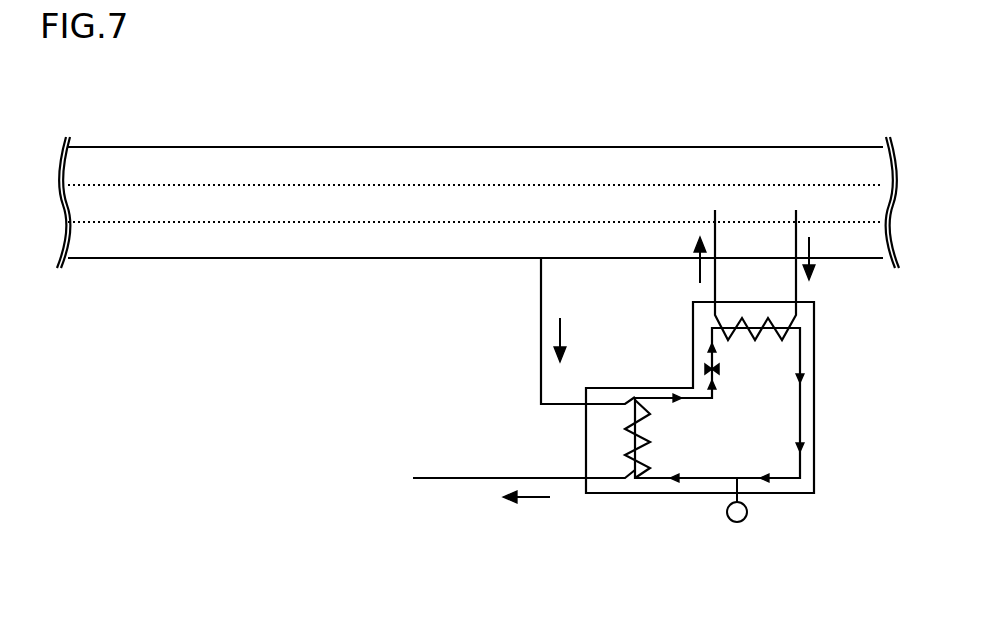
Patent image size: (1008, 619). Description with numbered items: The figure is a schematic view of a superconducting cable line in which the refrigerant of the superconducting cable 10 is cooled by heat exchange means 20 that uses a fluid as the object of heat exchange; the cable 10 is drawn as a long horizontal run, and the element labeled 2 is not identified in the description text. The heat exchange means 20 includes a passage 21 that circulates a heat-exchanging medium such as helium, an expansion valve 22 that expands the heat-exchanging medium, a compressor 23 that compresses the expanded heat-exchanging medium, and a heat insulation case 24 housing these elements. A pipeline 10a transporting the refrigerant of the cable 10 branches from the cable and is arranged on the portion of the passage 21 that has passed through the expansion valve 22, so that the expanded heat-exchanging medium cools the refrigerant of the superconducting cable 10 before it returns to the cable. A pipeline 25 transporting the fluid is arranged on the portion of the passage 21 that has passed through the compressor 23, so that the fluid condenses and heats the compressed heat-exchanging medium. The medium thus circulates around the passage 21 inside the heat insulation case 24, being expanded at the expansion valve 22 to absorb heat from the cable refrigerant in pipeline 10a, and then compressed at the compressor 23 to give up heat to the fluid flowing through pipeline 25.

The pipe 2 is at (183, 147).
The superconducting cable 10 is at (735, 185).
The pipeline 10a is at (798, 289).
The heat exchange means 20 is at (816, 368).
The passage 21 is at (805, 465).
The expansion valve 22 is at (705, 366).
The compressor 23 is at (727, 515).
The heat insulation case 24 is at (815, 422).
The pipeline 25 is at (541, 313).